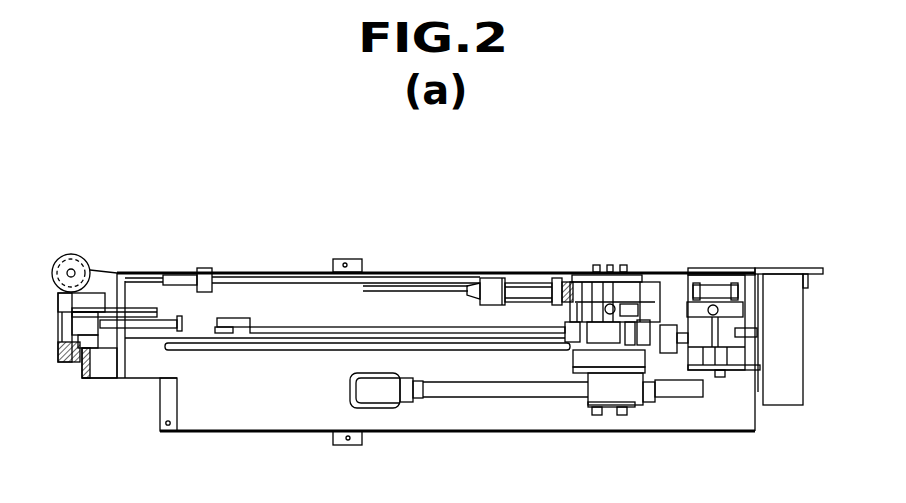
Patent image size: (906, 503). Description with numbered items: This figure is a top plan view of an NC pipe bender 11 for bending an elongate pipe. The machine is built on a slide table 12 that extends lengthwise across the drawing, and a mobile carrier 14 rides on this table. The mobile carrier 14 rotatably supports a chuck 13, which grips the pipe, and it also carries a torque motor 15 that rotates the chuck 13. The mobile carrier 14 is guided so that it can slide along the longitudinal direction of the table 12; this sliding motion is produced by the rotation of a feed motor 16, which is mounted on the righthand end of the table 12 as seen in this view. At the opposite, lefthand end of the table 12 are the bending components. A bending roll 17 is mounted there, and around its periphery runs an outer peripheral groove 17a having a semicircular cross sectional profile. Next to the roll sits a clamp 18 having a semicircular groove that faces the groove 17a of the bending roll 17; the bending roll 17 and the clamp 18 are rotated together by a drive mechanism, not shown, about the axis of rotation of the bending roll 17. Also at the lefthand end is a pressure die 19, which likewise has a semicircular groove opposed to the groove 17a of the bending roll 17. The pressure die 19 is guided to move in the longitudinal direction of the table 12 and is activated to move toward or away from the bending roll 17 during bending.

The NC pipe bender 11 is at (534, 268).
The slide table 12 is at (670, 432).
The chuck 13 is at (496, 278).
The mobile carrier 14 is at (617, 271).
The torque motor 15 is at (603, 350).
The feed motor 16 is at (804, 336).
The bending roll 17 is at (89, 254).
The outer peripheral groove 17a is at (69, 253).
The clamp 18 is at (58, 309).
The pressure die 19 is at (95, 286).